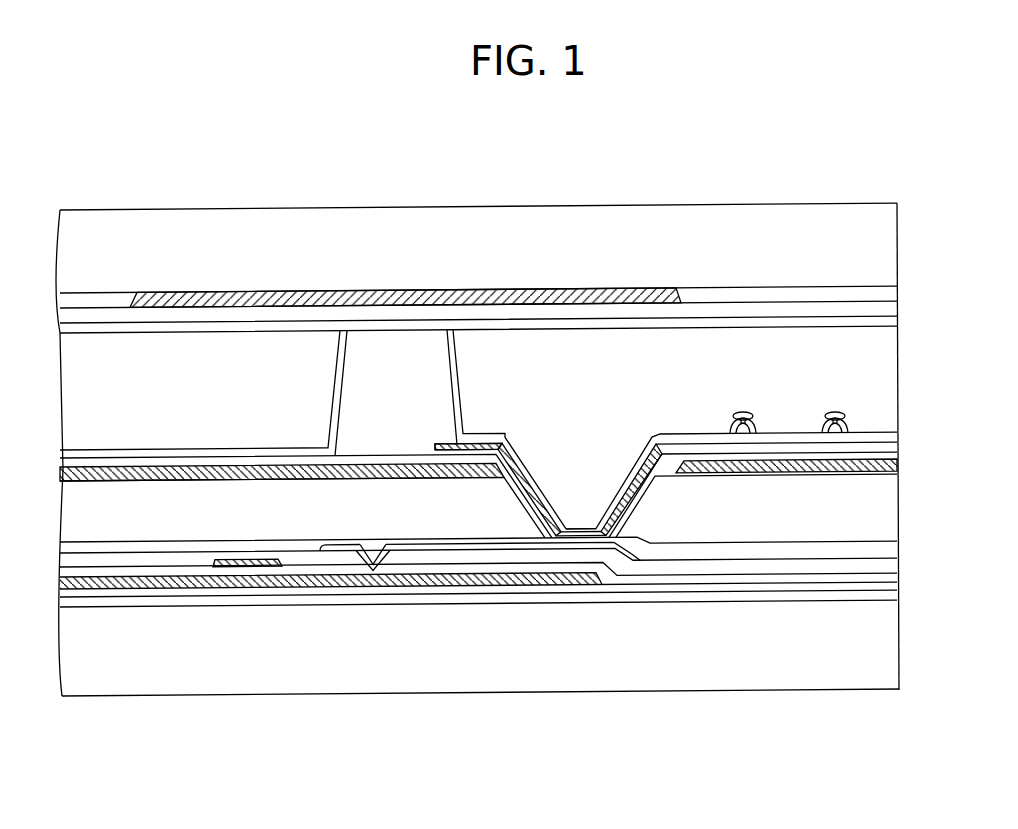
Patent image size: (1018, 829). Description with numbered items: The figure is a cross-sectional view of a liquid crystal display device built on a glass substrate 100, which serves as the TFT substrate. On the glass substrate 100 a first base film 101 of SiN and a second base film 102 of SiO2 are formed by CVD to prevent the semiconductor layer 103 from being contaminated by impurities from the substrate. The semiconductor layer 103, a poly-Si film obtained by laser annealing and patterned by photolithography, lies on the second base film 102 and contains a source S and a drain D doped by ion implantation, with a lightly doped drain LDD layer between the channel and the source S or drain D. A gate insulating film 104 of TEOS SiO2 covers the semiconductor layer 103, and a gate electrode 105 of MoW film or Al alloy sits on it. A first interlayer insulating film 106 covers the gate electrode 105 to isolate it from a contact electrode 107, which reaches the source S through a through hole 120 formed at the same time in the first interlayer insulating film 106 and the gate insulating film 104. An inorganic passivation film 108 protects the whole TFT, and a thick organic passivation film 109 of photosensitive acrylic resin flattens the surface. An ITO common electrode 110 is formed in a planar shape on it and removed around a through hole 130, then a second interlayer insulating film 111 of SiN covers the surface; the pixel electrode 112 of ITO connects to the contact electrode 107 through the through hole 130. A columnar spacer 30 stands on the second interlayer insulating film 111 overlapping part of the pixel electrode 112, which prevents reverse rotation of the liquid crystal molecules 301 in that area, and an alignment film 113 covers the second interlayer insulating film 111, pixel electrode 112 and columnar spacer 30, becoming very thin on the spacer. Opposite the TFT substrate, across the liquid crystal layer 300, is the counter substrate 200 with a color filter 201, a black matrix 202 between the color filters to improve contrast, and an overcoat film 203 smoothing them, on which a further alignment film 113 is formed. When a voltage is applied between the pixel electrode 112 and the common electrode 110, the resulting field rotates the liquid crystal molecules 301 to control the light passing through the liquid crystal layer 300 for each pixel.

The glass substrate 100 is at (897, 639).
The first base film 101 is at (565, 600).
The second base film 102 is at (630, 590).
The semiconductor layer 103 is at (233, 588).
The gate insulating film 104 is at (700, 578).
The gate electrode 105 is at (253, 568).
The first interlayer insulating film 106 is at (765, 565).
The contact electrode 107 is at (473, 553).
The inorganic passivation film 108 is at (830, 548).
The organic passivation film 109 is at (897, 505).
The common electrode 110 is at (268, 468).
The second interlayer insulating film 111 is at (417, 457).
The pixel electrode 112 is at (490, 447).
The alignment film 113 is at (606, 327).
The through hole 120 is at (372, 553).
The through hole 130 is at (587, 507).
The counter substrate 200 is at (897, 247).
The color filter 201 is at (108, 300).
The black matrix 202 is at (462, 292).
The overcoat film 203 is at (897, 307).
The liquid crystal layer 300 is at (897, 375).
The liquid crystal molecules 301 is at (835, 412).
The columnar spacer 30 is at (365, 371).
The drain D is at (128, 586).
The lightly doped drain layer LDD is at (198, 588).
The source S is at (363, 582).